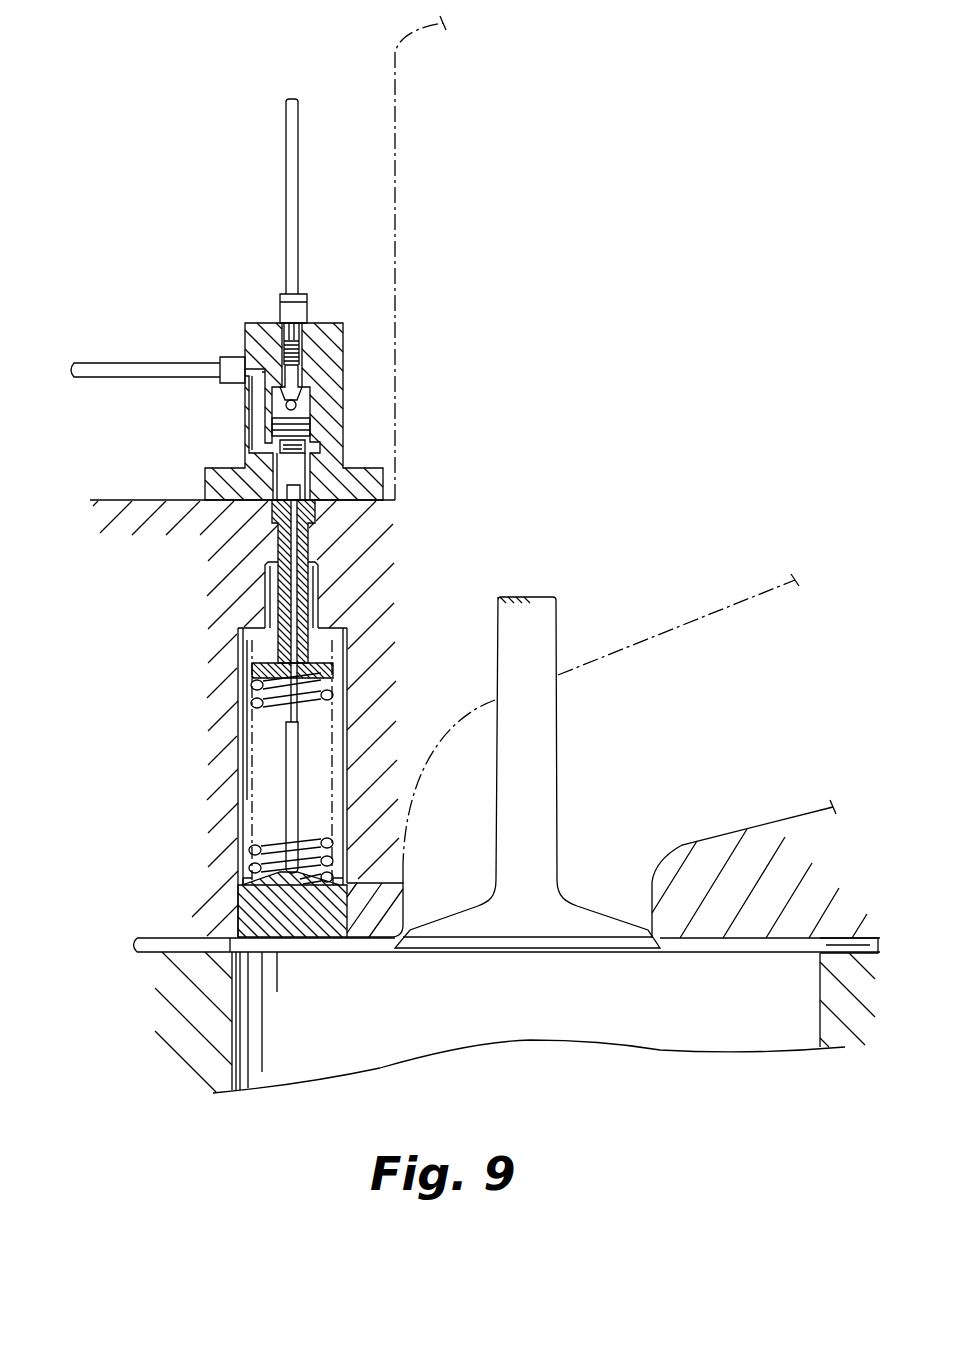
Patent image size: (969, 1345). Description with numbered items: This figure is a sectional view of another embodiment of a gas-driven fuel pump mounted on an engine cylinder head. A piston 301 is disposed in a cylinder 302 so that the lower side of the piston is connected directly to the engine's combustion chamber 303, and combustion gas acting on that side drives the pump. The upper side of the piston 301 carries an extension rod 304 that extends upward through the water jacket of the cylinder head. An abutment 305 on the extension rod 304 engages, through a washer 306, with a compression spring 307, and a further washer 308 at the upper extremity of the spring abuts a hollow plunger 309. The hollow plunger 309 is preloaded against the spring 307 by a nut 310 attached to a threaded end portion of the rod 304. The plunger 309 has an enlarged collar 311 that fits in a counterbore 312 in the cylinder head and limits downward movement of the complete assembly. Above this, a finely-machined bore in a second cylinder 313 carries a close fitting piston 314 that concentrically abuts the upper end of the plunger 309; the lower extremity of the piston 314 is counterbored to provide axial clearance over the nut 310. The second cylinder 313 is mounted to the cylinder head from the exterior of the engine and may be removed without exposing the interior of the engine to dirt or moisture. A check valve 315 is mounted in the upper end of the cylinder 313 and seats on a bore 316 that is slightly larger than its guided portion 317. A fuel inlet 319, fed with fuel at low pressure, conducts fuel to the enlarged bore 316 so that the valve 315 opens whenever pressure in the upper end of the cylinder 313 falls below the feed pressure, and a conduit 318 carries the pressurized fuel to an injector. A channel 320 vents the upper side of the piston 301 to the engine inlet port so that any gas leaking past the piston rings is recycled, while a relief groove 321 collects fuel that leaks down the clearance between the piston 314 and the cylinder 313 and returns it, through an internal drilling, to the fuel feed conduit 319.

The piston 301 is at (263, 905).
The cylinder 302 is at (237, 795).
The combustion chamber 303 is at (392, 985).
The extension rod 304 is at (290, 752).
The abutment 305 is at (240, 880).
The washer 306 is at (240, 883).
The compression spring 307 is at (330, 695).
The washer 308 is at (257, 683).
The hollow plunger 309 is at (314, 612).
The nut 310 is at (310, 498).
The enlarged collar 311 is at (322, 515).
The counterbore 312 is at (328, 534).
The second cylinder 313 is at (285, 403).
The close fitting piston 314 is at (312, 432).
The check valve 315 is at (302, 392).
The bore 316 is at (300, 350).
The guided portion 317 is at (277, 342).
The conduit 318 is at (299, 176).
The fuel inlet 319 is at (102, 363).
The channel 320 is at (380, 864).
The relief groove 321 is at (263, 447).